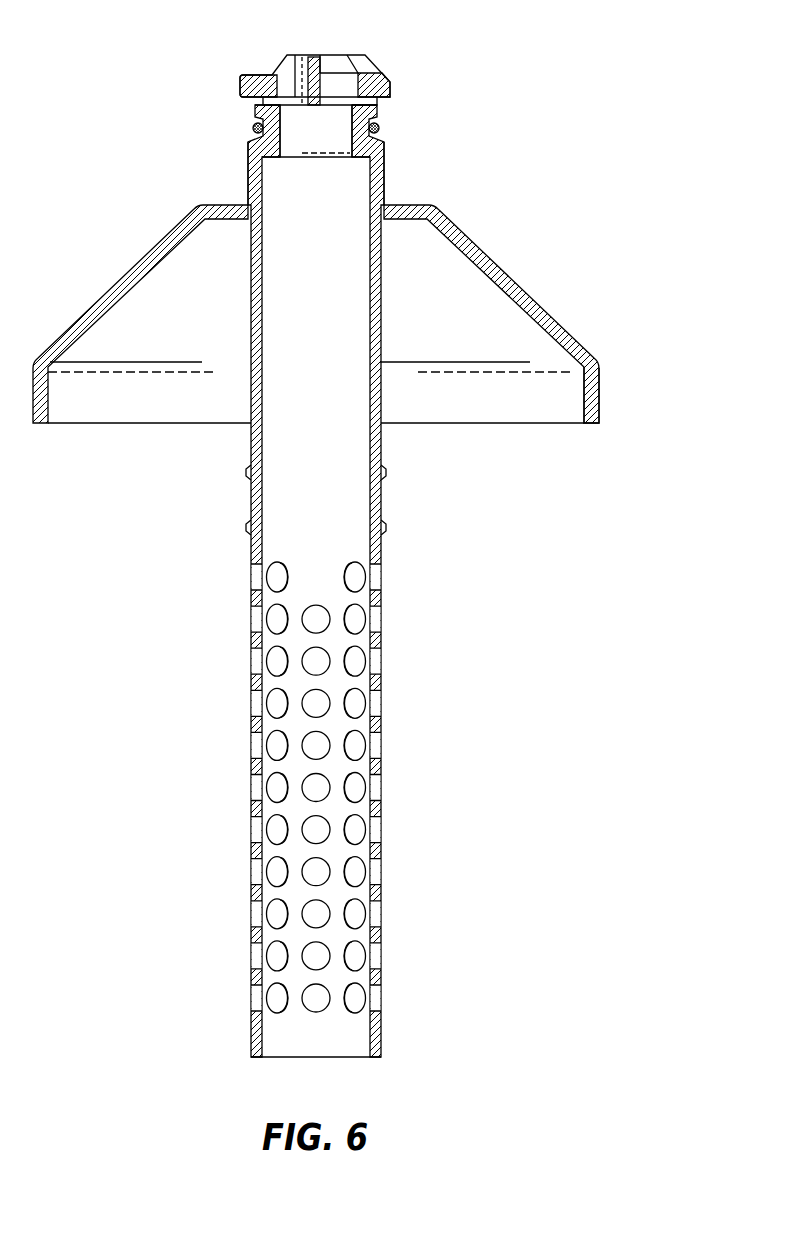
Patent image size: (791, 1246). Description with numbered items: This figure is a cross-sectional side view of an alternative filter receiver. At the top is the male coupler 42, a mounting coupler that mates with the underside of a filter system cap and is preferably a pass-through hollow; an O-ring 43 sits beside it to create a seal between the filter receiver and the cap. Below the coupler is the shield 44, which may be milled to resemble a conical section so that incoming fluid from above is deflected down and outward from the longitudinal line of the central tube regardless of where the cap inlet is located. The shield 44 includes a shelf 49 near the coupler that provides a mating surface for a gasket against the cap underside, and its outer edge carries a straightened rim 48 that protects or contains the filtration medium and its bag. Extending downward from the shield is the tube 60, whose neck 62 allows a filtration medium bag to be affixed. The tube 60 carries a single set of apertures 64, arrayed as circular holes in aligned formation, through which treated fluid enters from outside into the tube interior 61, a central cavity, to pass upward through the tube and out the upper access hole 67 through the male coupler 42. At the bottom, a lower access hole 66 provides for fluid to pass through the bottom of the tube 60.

The male coupler 42 is at (392, 88).
The O-ring 43 is at (379, 136).
The shield 44 is at (362, 327).
The straightened rim 48 is at (599, 393).
The shelf 49 is at (410, 203).
The tube 60 is at (362, 550).
The tube interior 61 is at (328, 430).
The neck 62 is at (296, 602).
The apertures 64 is at (365, 662).
The lower access hole 66 is at (347, 1048).
The upper access hole 67 is at (298, 125).